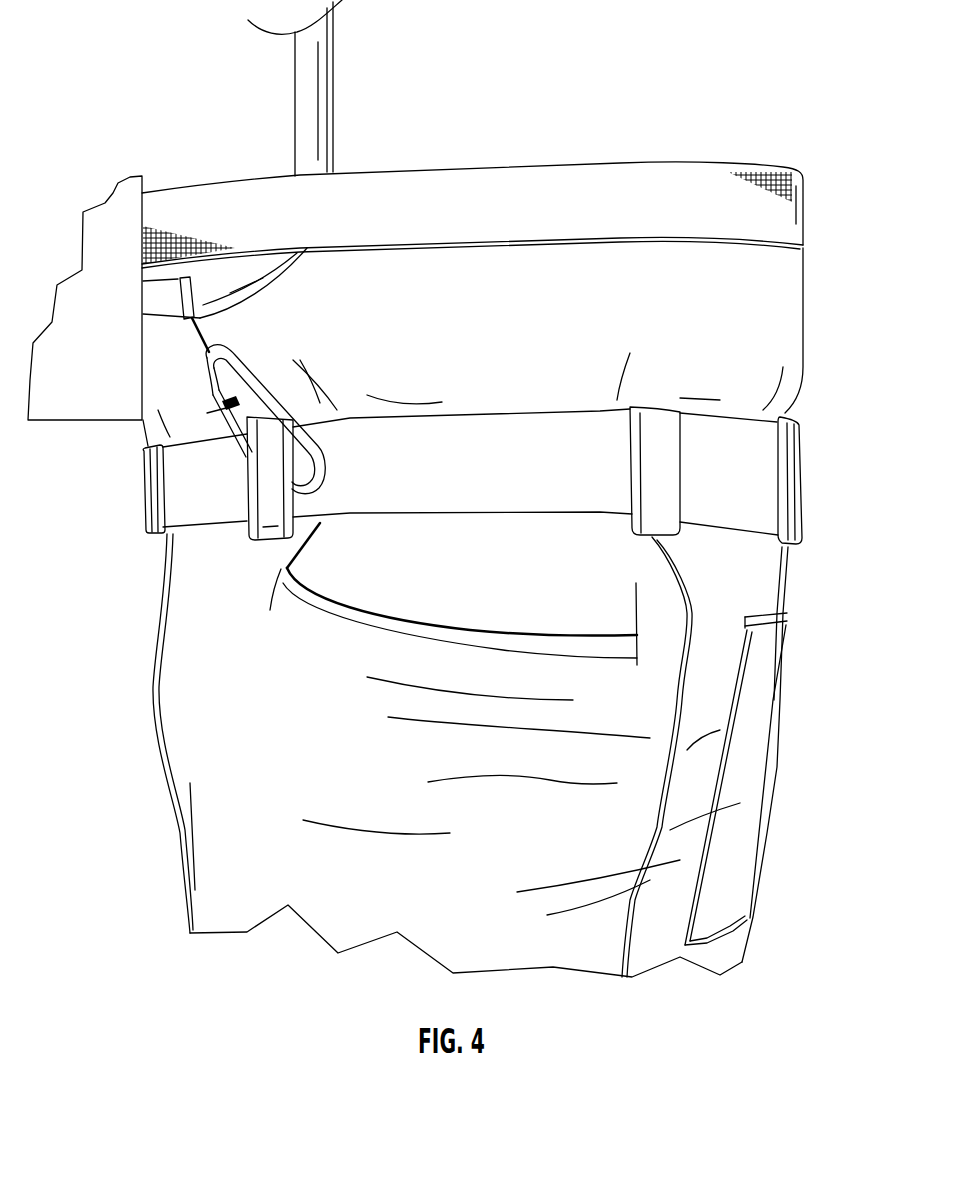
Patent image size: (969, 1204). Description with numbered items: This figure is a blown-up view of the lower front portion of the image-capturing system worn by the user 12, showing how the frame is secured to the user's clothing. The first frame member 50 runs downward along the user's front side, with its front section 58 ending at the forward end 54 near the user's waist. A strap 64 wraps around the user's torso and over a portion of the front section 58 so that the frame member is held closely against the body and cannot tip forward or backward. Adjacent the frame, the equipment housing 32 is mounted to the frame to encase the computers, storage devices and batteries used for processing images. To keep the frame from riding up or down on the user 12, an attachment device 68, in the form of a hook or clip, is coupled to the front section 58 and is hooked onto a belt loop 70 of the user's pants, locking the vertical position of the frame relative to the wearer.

The user 12 is at (812, 313).
The equipment housing 32 is at (73, 423).
The first frame member 50 is at (258, 77).
The forward end 54 is at (165, 307).
The front section 58 is at (322, 104).
The strap 64 is at (670, 183).
The attachment device 68 is at (262, 395).
The belt loop 70 is at (252, 528).